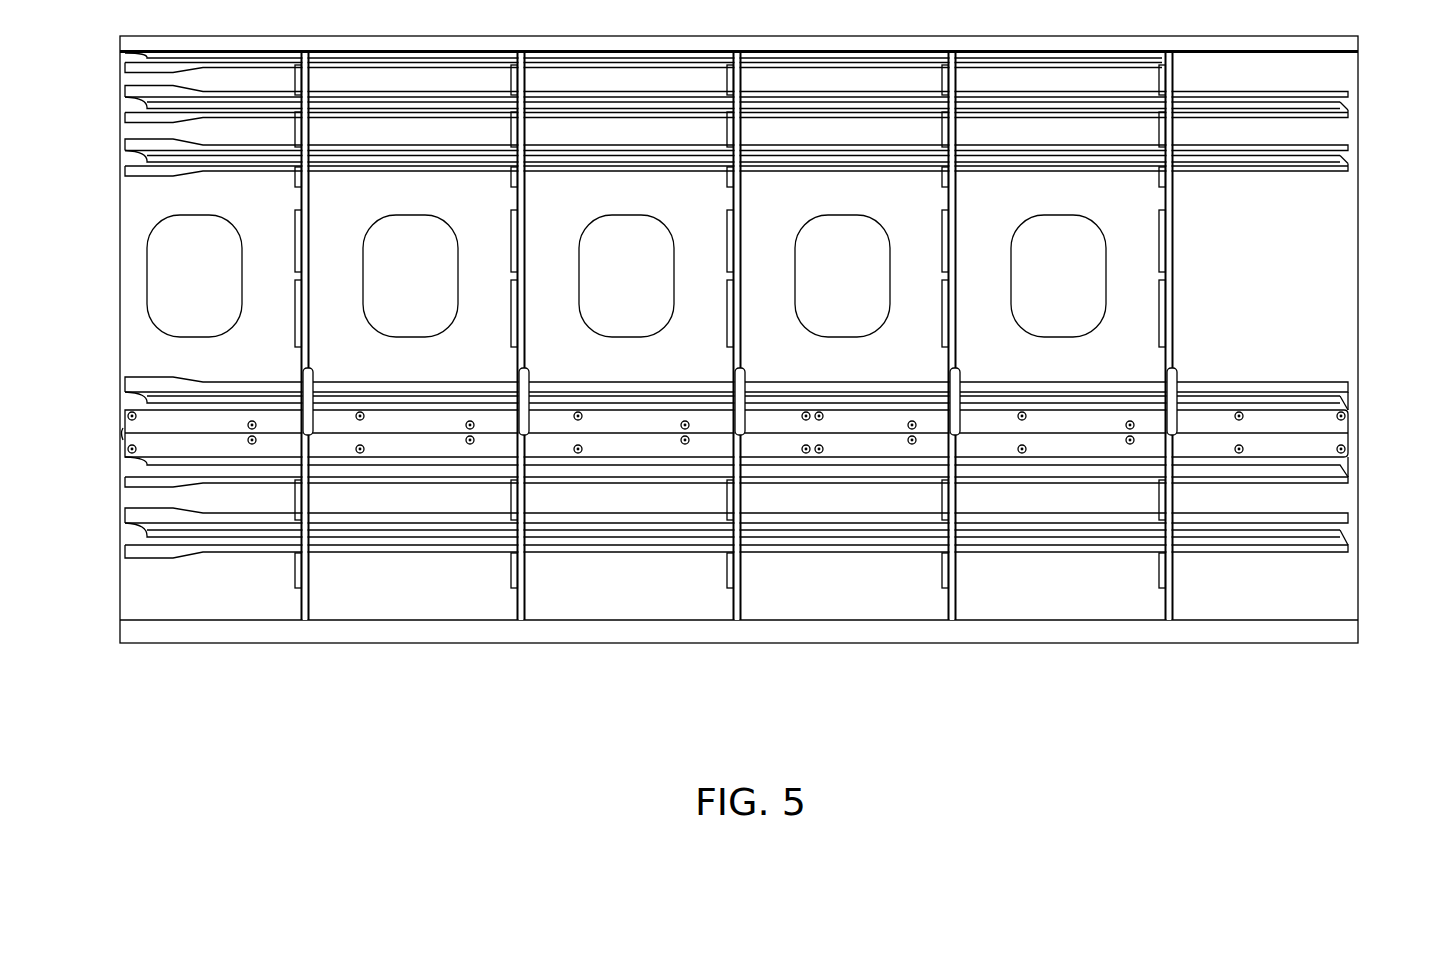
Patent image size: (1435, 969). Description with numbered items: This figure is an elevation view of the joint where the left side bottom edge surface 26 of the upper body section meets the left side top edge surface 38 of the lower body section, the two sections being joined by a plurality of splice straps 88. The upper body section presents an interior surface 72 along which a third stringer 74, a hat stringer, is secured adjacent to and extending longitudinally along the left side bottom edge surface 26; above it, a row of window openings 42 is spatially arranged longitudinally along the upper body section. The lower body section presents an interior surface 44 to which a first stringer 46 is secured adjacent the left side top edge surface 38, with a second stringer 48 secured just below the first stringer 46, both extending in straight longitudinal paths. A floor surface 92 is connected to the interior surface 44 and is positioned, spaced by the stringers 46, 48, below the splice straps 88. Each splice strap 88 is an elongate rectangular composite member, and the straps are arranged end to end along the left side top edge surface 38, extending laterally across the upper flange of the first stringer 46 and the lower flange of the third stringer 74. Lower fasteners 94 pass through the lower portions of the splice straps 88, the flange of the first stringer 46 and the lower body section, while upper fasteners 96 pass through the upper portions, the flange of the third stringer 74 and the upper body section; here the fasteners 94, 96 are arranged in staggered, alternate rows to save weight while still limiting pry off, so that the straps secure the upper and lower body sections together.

The left side bottom edge surface 26 is at (123, 436).
The left side top edge surface 38 is at (123, 430).
The window openings 42 is at (849, 250).
The interior surface 44 is at (1052, 585).
The first stringer 46 is at (1206, 495).
The second stringer 48 is at (1275, 560).
The interior surface 72 is at (1318, 247).
The third stringer 74 is at (1243, 365).
The splice straps 88 is at (1372, 427).
The floor surface 92 is at (850, 630).
The lower fasteners 94 is at (1282, 450).
The upper fasteners 96 is at (1281, 415).